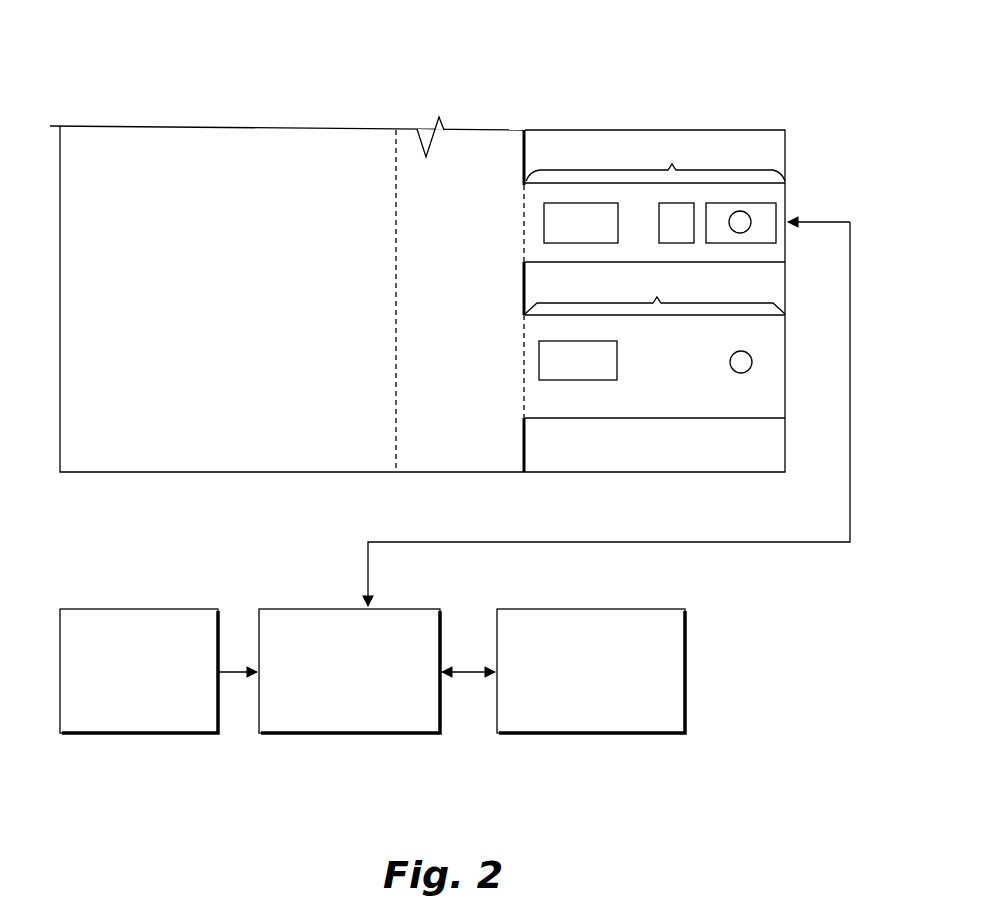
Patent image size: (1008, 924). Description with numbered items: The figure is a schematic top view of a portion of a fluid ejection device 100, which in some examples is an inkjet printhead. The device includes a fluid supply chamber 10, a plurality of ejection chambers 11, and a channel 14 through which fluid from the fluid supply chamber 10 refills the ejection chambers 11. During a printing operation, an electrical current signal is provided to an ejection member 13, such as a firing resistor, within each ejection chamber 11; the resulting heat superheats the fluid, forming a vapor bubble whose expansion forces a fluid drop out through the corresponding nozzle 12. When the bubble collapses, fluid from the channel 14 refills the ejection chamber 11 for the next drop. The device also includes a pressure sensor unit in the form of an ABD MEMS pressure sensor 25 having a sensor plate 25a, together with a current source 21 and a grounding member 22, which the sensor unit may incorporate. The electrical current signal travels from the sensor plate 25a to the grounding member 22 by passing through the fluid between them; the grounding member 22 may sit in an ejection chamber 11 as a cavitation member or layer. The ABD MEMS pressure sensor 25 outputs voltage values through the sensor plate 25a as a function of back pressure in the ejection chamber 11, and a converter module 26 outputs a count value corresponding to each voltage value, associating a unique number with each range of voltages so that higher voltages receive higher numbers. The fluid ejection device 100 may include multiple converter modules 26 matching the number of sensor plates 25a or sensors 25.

The fluid ejection device 100 is at (383, 47).
The fluid supply chamber 10 is at (175, 248).
The channel 14 is at (463, 190).
The ejection chamber 11 is at (655, 227).
The ejection member 13 is at (544, 228).
The grounding member 22 is at (683, 203).
The sensor plate 25a is at (785, 192).
The nozzle 12 is at (745, 233).
The current source 21 is at (127, 720).
The ABD MEMS pressure sensor 25 is at (337, 723).
The converter module 26 is at (579, 719).